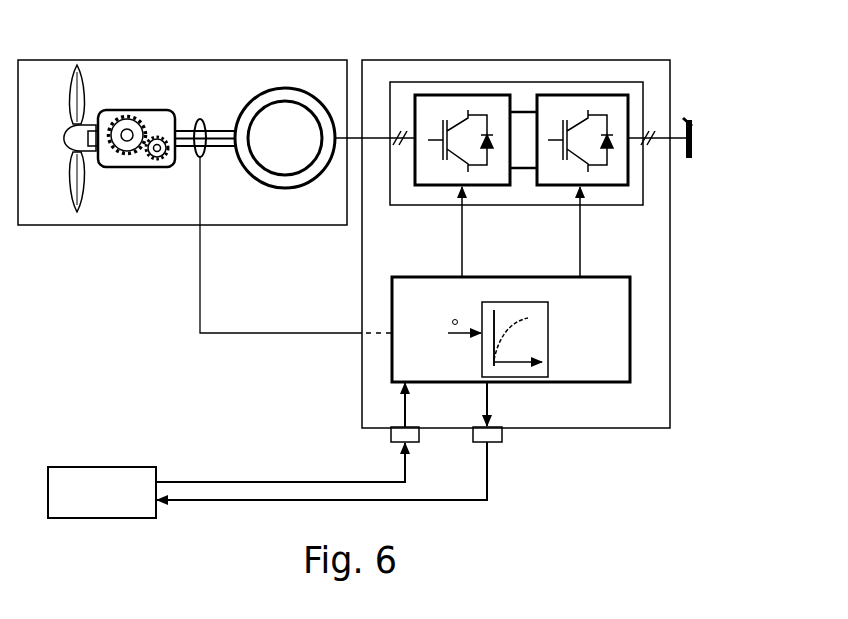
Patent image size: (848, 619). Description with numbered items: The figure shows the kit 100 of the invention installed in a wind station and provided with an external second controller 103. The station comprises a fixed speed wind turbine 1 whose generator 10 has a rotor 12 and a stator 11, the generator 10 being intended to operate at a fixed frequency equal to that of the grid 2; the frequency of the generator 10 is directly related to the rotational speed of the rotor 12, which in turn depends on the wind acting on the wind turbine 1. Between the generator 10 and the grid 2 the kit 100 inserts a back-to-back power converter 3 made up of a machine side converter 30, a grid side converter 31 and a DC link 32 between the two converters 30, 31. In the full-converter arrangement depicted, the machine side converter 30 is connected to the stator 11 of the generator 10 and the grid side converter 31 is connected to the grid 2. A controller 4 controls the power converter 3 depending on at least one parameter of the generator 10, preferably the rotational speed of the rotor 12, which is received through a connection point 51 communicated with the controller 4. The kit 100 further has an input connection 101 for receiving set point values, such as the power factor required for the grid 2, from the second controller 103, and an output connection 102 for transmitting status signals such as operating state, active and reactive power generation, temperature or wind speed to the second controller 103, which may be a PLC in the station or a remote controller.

The wind turbine 1 is at (77, 66).
The grid 2 is at (684, 120).
The power converter 3 is at (400, 86).
The controller 4 is at (632, 344).
The generator 10 is at (238, 103).
The stator 11 is at (267, 189).
The rotor 12 is at (272, 110).
The machine side converter 30 is at (455, 103).
The grid side converter 31 is at (570, 100).
The DC link 32 is at (512, 112).
The connection point 51 is at (345, 336).
The kit 100 is at (672, 410).
The input connection 101 is at (392, 435).
The output connection 102 is at (490, 436).
The second controller 103 is at (106, 480).